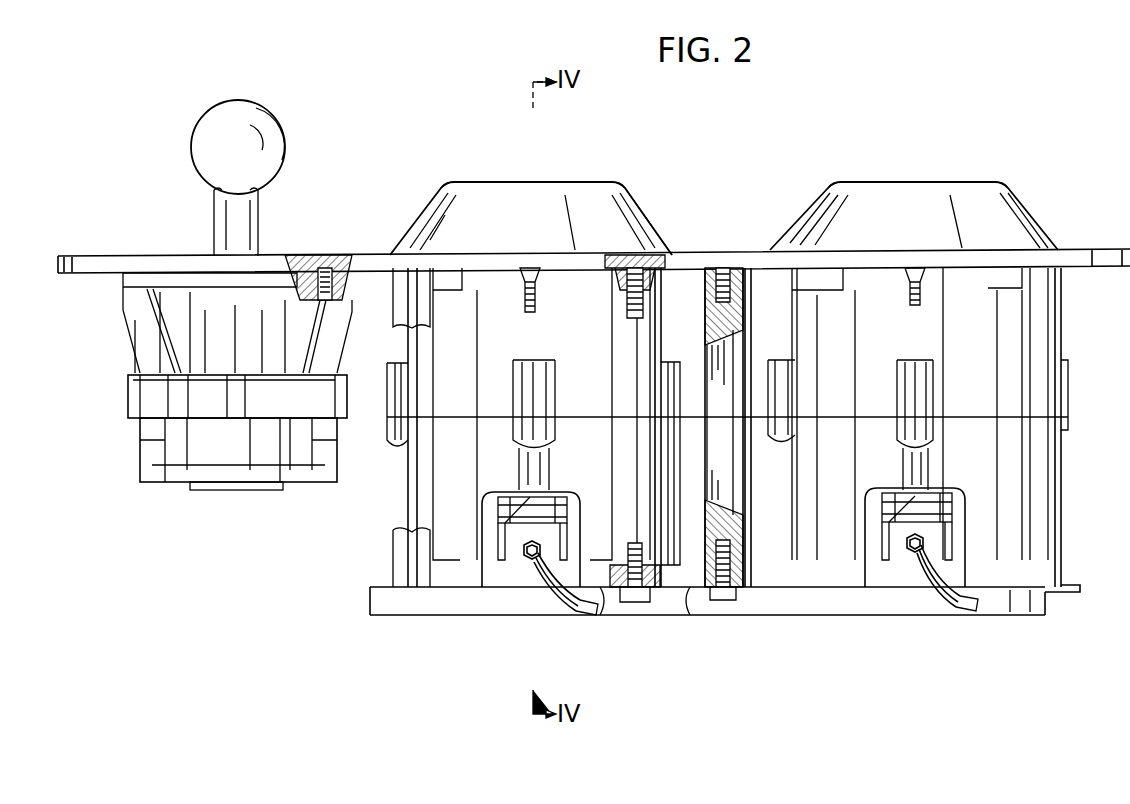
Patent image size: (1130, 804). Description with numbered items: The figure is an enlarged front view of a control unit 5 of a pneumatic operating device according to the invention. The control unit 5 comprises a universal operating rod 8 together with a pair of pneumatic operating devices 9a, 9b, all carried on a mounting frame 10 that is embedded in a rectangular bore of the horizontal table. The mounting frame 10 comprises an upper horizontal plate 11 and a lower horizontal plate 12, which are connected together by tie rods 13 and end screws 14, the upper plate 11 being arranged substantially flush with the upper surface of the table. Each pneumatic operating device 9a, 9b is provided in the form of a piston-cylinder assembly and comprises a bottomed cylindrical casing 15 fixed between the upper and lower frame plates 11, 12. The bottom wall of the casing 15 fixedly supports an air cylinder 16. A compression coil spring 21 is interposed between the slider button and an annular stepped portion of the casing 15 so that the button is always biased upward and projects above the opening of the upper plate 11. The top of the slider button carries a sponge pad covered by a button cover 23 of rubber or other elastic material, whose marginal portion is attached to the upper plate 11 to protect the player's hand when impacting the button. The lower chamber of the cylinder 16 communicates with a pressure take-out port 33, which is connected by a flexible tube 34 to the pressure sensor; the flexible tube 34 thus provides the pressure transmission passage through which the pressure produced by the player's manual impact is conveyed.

The control unit 5 is at (594, 182).
The universal operating rod 8 is at (258, 110).
The pneumatic operating device 9a is at (534, 185).
The pneumatic operating device 9b is at (884, 183).
The mounting frame 10 is at (1078, 248).
The upper horizontal plate 11 is at (695, 250).
The lower horizontal plate 12 is at (735, 600).
The tie rod 13 is at (757, 290).
The end screw 14 is at (723, 268).
The bottomed cylindrical casing 15 is at (406, 478).
The air cylinder 16 is at (500, 560).
The compression coil spring 21 is at (530, 497).
The button cover 23 is at (470, 185).
The pressure take-out port 33 is at (514, 557).
The flexible tube 34 is at (563, 612).